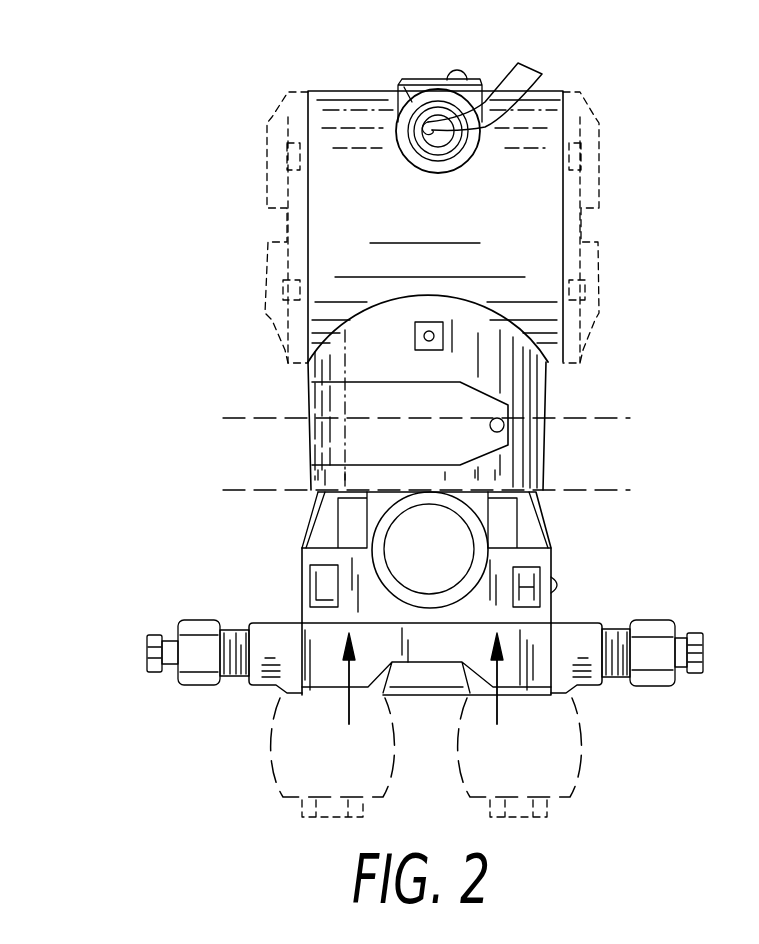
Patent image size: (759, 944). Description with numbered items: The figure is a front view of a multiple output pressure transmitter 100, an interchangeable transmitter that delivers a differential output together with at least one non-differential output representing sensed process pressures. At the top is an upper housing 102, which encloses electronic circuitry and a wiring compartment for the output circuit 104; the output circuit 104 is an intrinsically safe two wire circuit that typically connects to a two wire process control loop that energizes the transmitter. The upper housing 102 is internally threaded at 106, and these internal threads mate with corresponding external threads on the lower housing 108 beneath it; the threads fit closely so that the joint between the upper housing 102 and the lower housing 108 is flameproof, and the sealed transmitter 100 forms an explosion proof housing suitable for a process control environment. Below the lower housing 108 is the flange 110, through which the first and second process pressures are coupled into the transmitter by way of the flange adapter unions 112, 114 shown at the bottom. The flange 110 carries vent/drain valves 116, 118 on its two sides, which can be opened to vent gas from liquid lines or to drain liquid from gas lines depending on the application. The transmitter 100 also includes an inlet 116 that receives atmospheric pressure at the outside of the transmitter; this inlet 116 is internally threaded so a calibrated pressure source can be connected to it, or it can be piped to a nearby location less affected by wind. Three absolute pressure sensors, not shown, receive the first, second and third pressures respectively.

The multiple output pressure transmitter 100 is at (233, 210).
The upper housing 102 is at (336, 90).
The output circuit 104 is at (553, 78).
The internal threads 106 is at (222, 407).
The lower housing 108 is at (288, 555).
The flange 110 is at (318, 632).
The flange adapter union 112 is at (285, 731).
The flange adapter union 114 is at (553, 728).
The vent/drain valve / inlet 116 is at (457, 535).
The vent/drain valve 118 is at (649, 620).